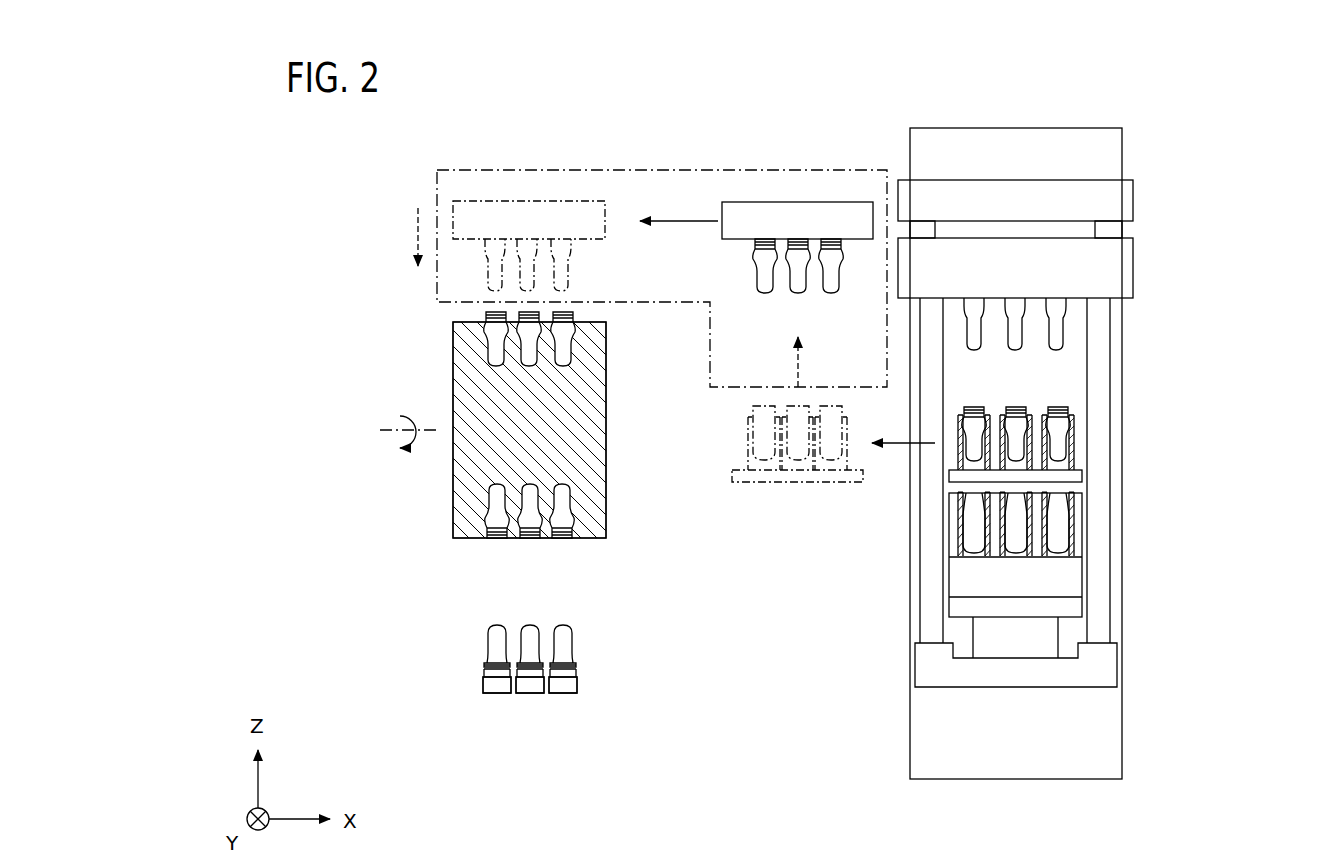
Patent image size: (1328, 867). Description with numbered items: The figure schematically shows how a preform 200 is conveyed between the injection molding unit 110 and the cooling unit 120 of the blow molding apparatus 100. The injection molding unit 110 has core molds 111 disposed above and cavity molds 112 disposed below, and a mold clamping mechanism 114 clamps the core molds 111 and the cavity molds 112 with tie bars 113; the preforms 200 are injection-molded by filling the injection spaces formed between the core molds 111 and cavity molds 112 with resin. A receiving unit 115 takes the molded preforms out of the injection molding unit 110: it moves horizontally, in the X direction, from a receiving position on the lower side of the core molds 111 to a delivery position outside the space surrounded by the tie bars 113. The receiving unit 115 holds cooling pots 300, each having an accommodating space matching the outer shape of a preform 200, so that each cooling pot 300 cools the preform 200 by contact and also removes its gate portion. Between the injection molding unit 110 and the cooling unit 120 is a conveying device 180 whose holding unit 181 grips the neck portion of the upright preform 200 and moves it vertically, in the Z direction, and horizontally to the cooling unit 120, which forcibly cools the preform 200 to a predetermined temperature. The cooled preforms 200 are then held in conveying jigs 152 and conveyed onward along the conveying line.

The blow molding apparatus 100 is at (1240, 105).
The injection molding unit 110 is at (1128, 513).
The core molds 111 is at (1062, 328).
The cavity molds 112 is at (1075, 535).
The tie bars 113 is at (1112, 385).
The mold clamping mechanism 114 is at (1133, 197).
The receiving unit 115 is at (768, 484).
The cooling unit 120 is at (606, 432).
The conveying jigs 152 is at (563, 693).
The conveying device 180 is at (793, 170).
The holding unit 181 is at (505, 201).
The preform 200 is at (831, 293).
The cooling pot 300 is at (822, 462).